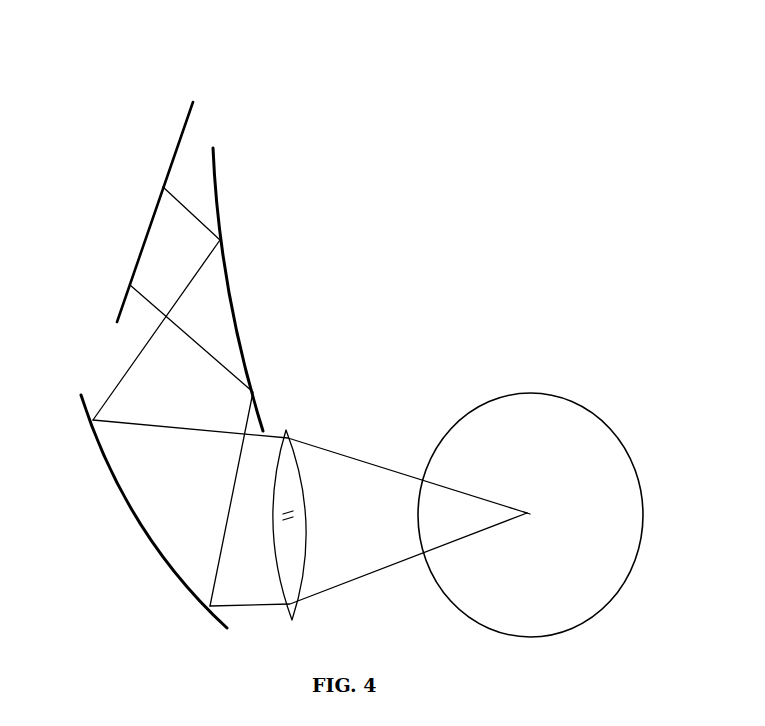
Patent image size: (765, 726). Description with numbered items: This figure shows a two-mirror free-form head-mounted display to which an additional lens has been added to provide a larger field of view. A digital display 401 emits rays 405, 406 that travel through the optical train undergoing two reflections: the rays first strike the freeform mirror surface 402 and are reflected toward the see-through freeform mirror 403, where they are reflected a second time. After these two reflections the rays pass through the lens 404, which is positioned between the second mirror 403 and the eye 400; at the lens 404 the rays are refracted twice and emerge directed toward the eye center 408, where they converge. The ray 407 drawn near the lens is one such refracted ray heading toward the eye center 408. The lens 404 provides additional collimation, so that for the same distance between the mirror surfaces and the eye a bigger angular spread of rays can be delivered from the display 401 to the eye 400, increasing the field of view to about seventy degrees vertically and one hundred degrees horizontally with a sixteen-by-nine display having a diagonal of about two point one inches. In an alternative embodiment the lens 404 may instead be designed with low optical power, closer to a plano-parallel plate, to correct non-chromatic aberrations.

The eye 400 is at (570, 398).
The display 401 is at (186, 110).
The freeform mirror surface 402 is at (225, 258).
The see-through freeform mirror 403 is at (112, 463).
The lens 404 is at (295, 560).
The ray 405 is at (183, 206).
The ray 406 is at (137, 297).
The focused light ray 407 is at (295, 440).
The eye center 408 is at (529, 510).